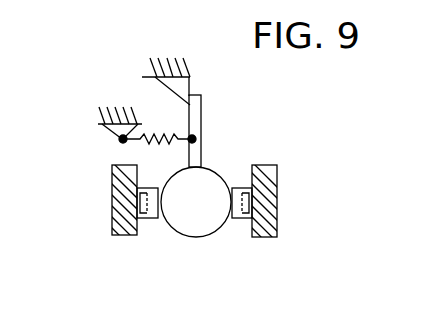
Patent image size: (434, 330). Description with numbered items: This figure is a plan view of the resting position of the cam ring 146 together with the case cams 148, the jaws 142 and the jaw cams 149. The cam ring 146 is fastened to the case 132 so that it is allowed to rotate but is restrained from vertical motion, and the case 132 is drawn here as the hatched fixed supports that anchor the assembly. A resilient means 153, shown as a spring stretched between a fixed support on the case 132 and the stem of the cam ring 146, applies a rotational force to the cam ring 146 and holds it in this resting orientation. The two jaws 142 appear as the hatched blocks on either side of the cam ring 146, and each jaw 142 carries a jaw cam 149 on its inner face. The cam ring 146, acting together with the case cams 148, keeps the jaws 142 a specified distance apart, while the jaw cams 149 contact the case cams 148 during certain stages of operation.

The case 132 is at (155, 66).
The resilient means 153 is at (148, 141).
The cam ring 146 is at (198, 185).
The jaw 142 is at (268, 210).
The case cam 148 is at (157, 216).
The jaw cam 149 is at (237, 218).